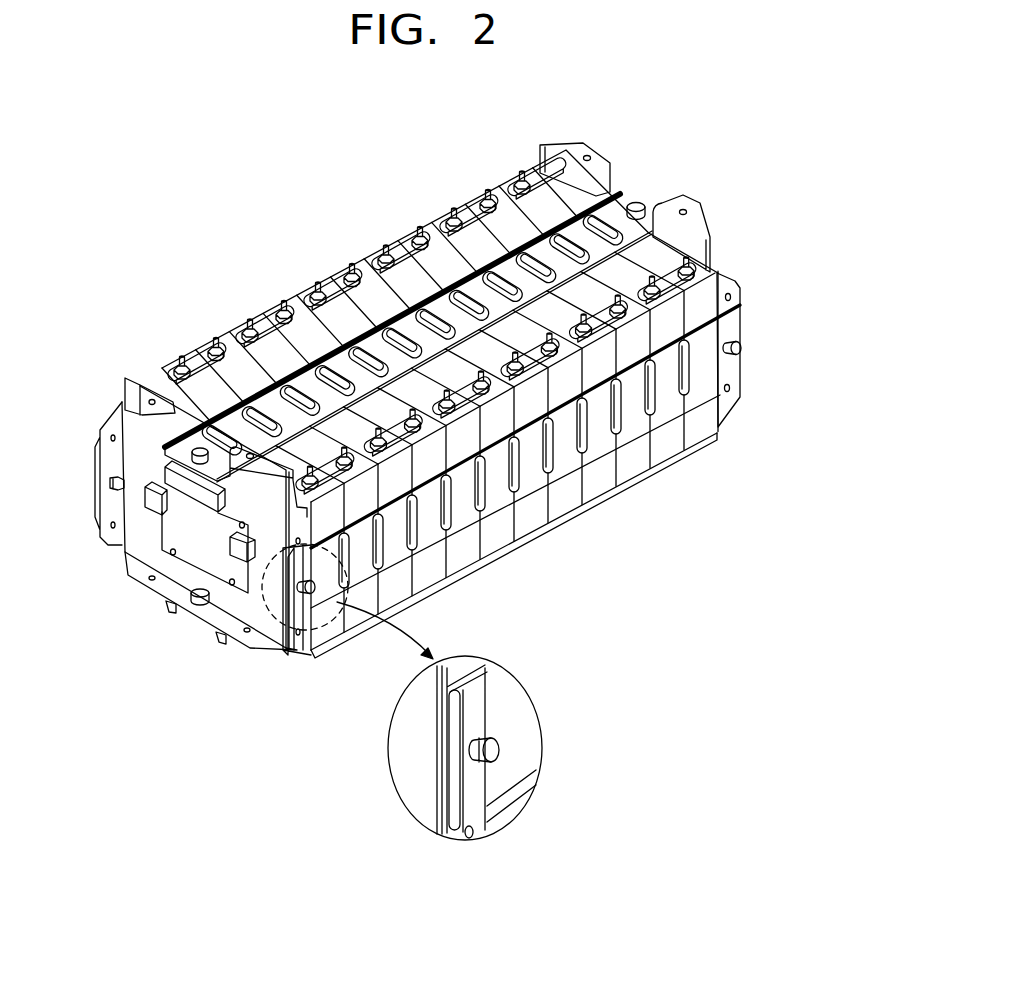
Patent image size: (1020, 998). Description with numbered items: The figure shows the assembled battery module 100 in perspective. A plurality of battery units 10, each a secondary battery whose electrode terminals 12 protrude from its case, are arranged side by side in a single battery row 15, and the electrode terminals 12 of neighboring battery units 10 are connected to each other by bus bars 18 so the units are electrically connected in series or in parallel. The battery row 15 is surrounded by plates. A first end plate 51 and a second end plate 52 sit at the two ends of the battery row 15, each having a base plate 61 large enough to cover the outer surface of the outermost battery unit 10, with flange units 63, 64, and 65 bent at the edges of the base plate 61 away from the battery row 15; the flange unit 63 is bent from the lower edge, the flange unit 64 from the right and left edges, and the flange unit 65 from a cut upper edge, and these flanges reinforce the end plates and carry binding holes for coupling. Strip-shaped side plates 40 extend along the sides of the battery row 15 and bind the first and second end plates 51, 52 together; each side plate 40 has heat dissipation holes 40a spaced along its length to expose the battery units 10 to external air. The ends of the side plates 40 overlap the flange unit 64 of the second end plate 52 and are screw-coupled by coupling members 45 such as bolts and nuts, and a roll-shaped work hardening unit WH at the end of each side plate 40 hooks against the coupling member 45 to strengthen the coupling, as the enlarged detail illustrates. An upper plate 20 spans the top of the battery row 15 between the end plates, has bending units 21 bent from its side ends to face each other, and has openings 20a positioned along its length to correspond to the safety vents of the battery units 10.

The battery module 100 is at (290, 246).
The battery unit 10 is at (668, 441).
The electrode terminal 12 is at (553, 346).
The battery row 15 is at (487, 559).
The bus bar 18 is at (205, 362).
The upper plate 20 is at (472, 287).
The opening 20a is at (518, 252).
The bending unit 21 is at (621, 193).
The side plate 40 is at (534, 478).
The heat dissipation hole 40a is at (553, 470).
The coupling member 45 is at (738, 353).
The first end plate 51 is at (720, 248).
The second end plate 52 is at (117, 556).
The base plate 61 is at (148, 550).
The flange unit 63 is at (256, 637).
The flange unit 64 is at (738, 285).
The flange unit 65 is at (567, 152).
The work hardening unit WH is at (444, 790).